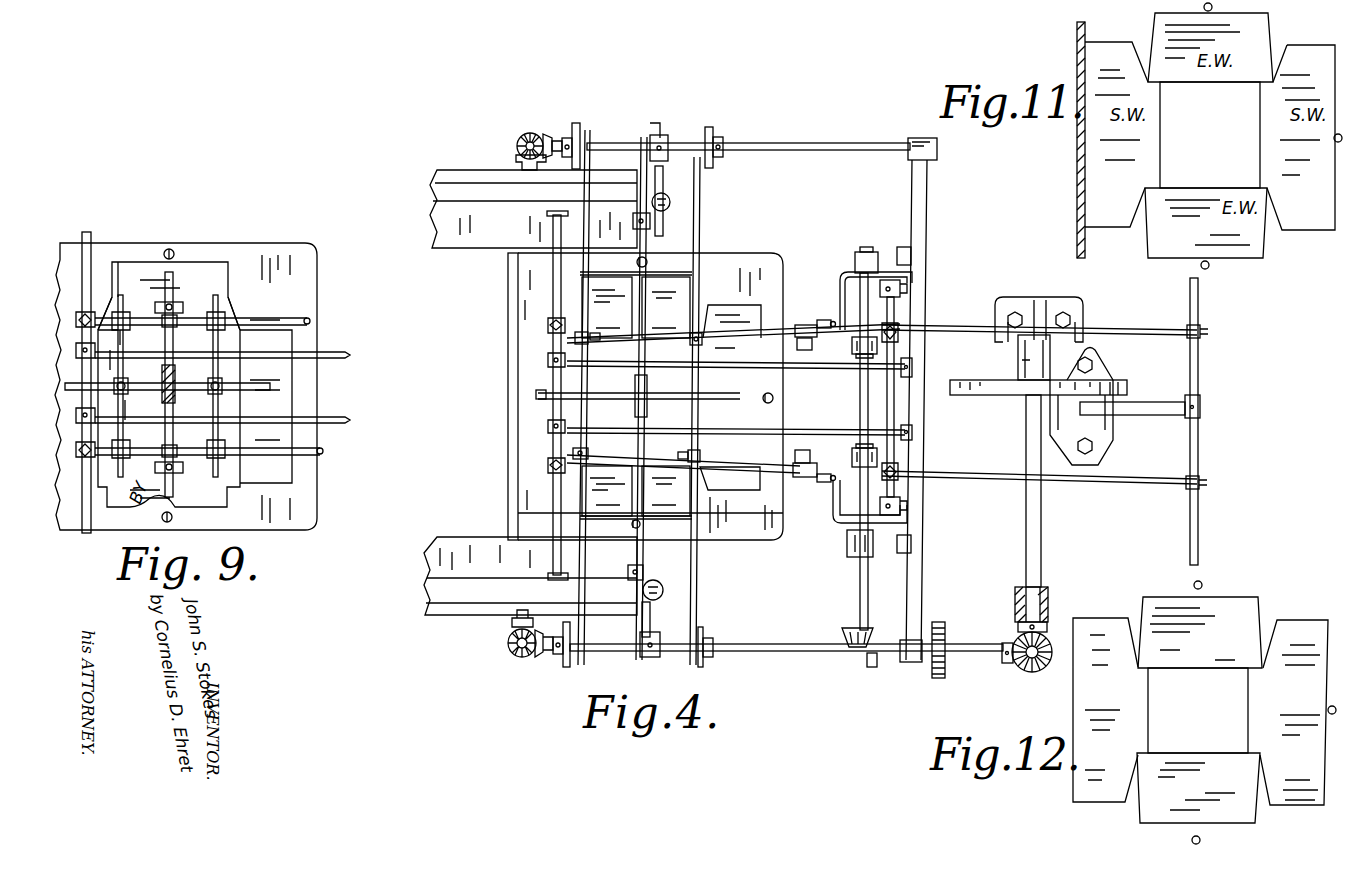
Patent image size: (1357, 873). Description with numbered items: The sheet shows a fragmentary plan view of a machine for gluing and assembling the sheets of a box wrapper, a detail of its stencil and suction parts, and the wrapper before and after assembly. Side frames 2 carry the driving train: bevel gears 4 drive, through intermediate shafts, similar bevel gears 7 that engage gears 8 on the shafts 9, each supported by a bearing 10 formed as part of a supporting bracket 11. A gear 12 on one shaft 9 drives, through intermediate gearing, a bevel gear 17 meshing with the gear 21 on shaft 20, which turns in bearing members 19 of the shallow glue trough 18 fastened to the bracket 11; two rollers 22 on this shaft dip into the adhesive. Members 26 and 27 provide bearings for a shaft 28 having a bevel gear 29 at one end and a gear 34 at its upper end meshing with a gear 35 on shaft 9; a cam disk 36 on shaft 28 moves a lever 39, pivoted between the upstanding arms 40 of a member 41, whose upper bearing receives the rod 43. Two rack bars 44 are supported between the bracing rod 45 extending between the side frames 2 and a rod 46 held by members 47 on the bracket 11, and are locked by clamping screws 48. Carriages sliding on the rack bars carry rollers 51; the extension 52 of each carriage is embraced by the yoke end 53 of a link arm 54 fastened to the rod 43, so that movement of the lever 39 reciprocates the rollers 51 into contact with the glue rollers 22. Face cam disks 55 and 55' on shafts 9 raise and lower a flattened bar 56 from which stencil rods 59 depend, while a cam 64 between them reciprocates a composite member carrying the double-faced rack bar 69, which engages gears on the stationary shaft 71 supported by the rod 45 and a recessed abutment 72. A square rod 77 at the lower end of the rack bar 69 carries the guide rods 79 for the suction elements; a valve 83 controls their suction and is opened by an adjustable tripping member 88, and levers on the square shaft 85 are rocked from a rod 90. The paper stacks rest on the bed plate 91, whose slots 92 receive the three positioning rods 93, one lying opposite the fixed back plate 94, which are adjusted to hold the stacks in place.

In FIG. 4, the side frames 2 is at (465, 177).
In FIG. 4, the miter or bevel gears 4 is at (518, 158).
In FIG. 4, the miter or bevel gear 7 is at (529, 133).
In FIG. 4, the gear 8 is at (548, 134).
In FIG. 4, the shaft 9 is at (795, 147).
In FIG. 4, the bearing 10 is at (937, 148).
In FIG. 4, the supporting bracket 11 is at (922, 203).
In FIG. 4, the gear 12 is at (946, 630).
In FIG. 4, the bevel gear 17 is at (867, 660).
In FIG. 4, the trough or tray 18 is at (836, 524).
In FIG. 4, the bearing members 19 is at (857, 253).
In FIG. 4, the shaft 20 is at (858, 386).
In FIG. 4, the gear 21 is at (842, 640).
In FIG. 4, the rollers 22 is at (878, 346).
In FIG. 4, the member 26 is at (1050, 600).
In FIG. 4, the member 27 is at (1083, 312).
In FIG. 4, the shaft 28 is at (1030, 533).
In FIG. 4, the bevel or miter gear 29 is at (1048, 630).
In FIG. 4, the gear 34 is at (1033, 673).
In FIG. 4, the gear 35 is at (1004, 664).
In FIG. 4, the disk 36 is at (1012, 392).
In FIG. 4, the lever 39 is at (1150, 415).
In FIG. 4, the upstanding arms 40 is at (1108, 428).
In FIG. 4, the member 41 is at (1100, 360).
In FIG. 4, the rod 43 is at (1199, 372).
In FIG. 4, the rack bars 44 is at (725, 330).
In FIG. 4, the stay or bracing rod 45 is at (552, 264).
In FIG. 4, the rod 46 is at (895, 395).
In FIG. 4, the members 47 is at (900, 288).
In FIG. 4, the clamping screws 48 is at (548, 325).
In FIG. 4, the roller 51 is at (795, 345).
In FIG. 4, the extension 52 is at (811, 325).
In FIG. 4, the yoke end 53 is at (828, 320).
In FIG. 4, the link arm 54 is at (952, 328).
In FIG. 4, the face cam disk 55 is at (575, 390).
In FIG. 4, the face cam disk 55' is at (726, 388).
In FIG. 4, the flattened bar 56 is at (588, 182).
In FIG. 4, the stencil rods 59 is at (690, 337).
In FIG. 4, the cam 64 is at (648, 140).
In FIG. 9, the rack bar 69 is at (178, 400).
In FIG. 4, the stationary shaft 71 is at (678, 367).
In FIG. 4, the recessed abutment 72 is at (913, 366).
In FIG. 4, the square rod or bar 77 is at (538, 395).
In FIG. 9, the square rod or bar 77 is at (268, 392).
In FIG. 9, the guide rods 79 is at (124, 306).
In FIG. 4, the valve 83 is at (666, 208).
In FIG. 9, the square rod 85 is at (310, 324).
In FIG. 4, the tripping member 88 is at (665, 138).
In FIG. 9, the rod 90 is at (173, 280).
In FIG. 4, the bed plate 91 is at (742, 260).
In FIG. 9, the bed plate 91 is at (317, 530).
In FIG. 4, the slots 92 is at (637, 262).
In FIG. 9, the slots 92 is at (172, 250).
In FIG. 4, the positioning rods 93 is at (633, 525).
In FIG. 9, the positioning rods 93 is at (175, 255).
In FIG. 11, the positioning rods 93 is at (1212, 5).
In FIG. 12, the positioning rods 93 is at (1202, 582).
In FIG. 4, the fixed back plate 94 is at (508, 378).
In FIG. 11, the fixed back plate 94 is at (1077, 155).